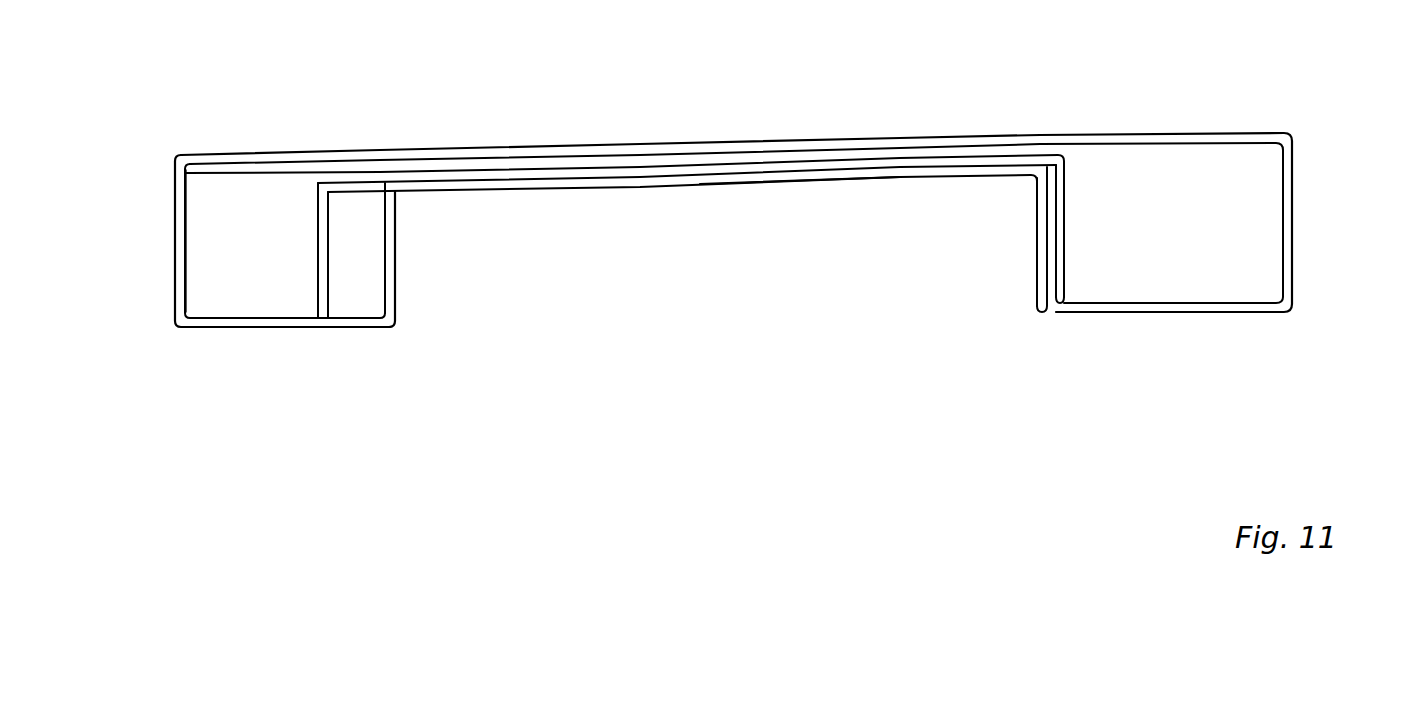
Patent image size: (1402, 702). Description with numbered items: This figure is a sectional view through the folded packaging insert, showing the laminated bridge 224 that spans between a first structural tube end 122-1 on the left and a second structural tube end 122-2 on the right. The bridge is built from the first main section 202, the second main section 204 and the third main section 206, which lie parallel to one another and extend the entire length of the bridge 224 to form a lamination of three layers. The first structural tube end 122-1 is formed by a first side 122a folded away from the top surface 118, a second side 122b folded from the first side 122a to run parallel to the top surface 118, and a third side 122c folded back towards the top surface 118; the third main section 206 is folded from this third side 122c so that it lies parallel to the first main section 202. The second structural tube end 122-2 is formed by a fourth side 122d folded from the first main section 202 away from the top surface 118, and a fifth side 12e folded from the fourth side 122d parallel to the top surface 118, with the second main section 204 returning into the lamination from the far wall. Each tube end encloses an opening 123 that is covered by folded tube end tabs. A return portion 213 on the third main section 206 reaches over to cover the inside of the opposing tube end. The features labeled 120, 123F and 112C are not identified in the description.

The top surface 118 is at (1112, 130).
The first main section 202 is at (568, 148).
The second main section 204 is at (783, 157).
The third main section 206 is at (943, 165).
The laminated bridge 224 is at (1021, 192).
The inner surface 120 is at (908, 185).
The first side 122a is at (174, 243).
The second side 122b is at (205, 328).
The third side 122c is at (319, 265).
The fourth side 122d is at (1295, 222).
The fifth side 12e is at (1256, 312).
The first structural tube end 122-1 is at (278, 342).
The second structural tube end 122-2 is at (1172, 328).
The opening 123 is at (264, 257).
The finger 123F is at (1070, 253).
The slot 112C is at (395, 255).
The return portion 213 is at (1035, 258).